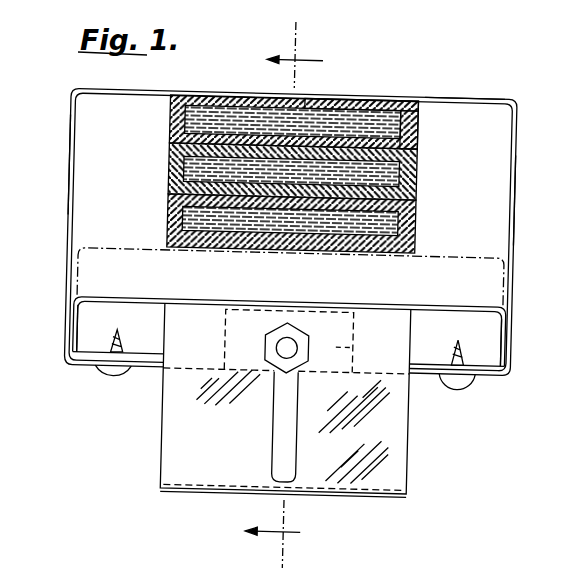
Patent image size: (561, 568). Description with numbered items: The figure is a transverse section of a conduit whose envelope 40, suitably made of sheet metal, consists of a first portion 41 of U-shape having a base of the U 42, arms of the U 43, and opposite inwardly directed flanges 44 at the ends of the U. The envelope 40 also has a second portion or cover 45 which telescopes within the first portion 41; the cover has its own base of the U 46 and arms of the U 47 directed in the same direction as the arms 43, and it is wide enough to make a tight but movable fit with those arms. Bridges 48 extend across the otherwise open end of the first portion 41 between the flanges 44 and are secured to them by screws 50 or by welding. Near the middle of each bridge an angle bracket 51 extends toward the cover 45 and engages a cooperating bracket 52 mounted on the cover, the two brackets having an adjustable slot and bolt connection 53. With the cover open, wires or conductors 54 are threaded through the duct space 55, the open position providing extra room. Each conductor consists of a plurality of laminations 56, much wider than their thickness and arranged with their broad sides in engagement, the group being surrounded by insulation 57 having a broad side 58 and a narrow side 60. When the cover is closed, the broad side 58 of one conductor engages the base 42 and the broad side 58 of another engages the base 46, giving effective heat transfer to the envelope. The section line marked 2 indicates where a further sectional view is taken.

The envelope 40 is at (66, 204).
The first portion 41 is at (512, 183).
The base of the U 42 is at (457, 94).
The arms of the U 43 is at (70, 157).
The inwardly directed flanges 44 is at (149, 360).
The cover 45 is at (380, 302).
The base of the U 46 is at (218, 302).
The arms of the U 47 is at (78, 325).
The bridges 48 is at (430, 377).
The screws 50 is at (464, 384).
The angle bracket 51 is at (354, 346).
The bracket 52 is at (372, 512).
The slot and bolt connection 53 is at (306, 376).
The wires or conductors 54 is at (414, 179).
The duct space 55 is at (465, 218).
The laminations 56 is at (404, 104).
The insulation 57 is at (366, 98).
The broad side 58 is at (226, 98).
The narrow side 60 is at (414, 127).
The section line 2- 2 is at (295, 294).